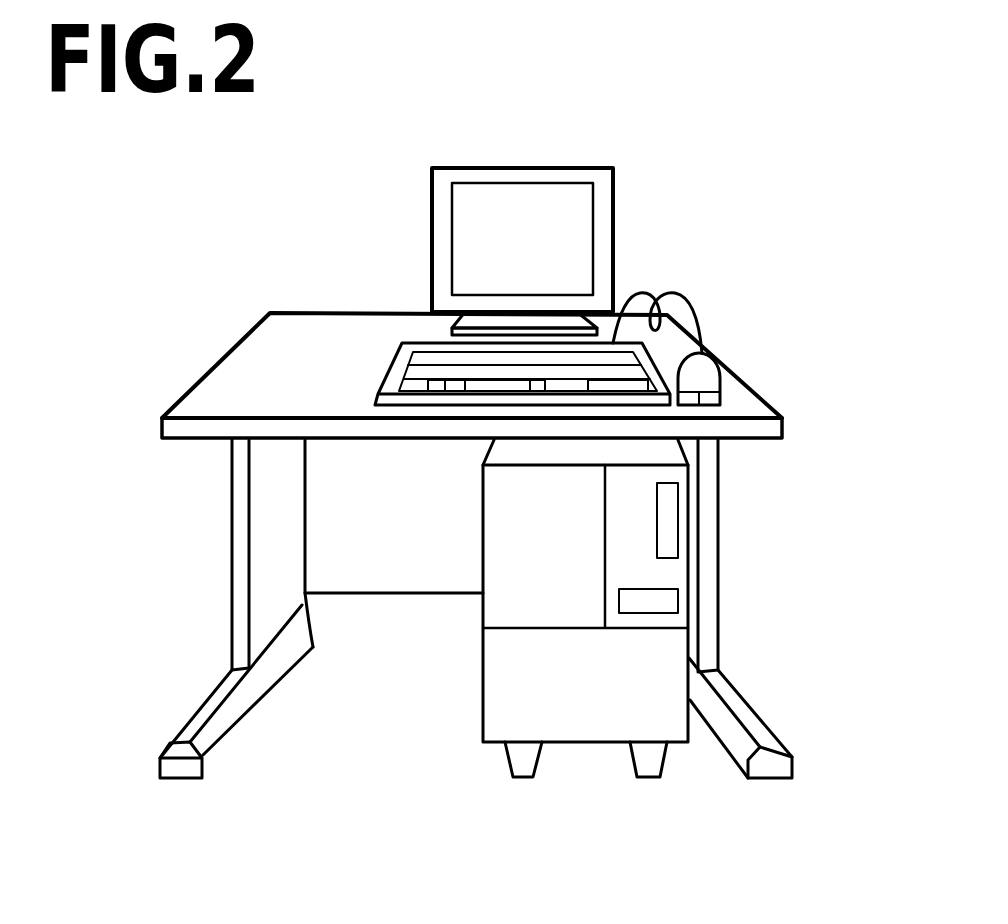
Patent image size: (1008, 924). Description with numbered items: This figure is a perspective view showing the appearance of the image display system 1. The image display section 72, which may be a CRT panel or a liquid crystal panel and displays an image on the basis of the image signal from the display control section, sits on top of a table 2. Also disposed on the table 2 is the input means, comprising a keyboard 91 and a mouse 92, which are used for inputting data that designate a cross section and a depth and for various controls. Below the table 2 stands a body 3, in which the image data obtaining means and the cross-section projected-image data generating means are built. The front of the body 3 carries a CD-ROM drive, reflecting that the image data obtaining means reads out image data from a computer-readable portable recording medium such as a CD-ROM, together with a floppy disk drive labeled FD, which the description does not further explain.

The image display system 1 is at (233, 184).
The table 2 is at (755, 410).
The body 3 is at (498, 680).
The image display section 72 is at (543, 193).
The keyboard 91 is at (395, 387).
The mouse 92 is at (705, 368).
The element CD-ROM is at (668, 528).
The floppy disk drive FD is at (667, 603).